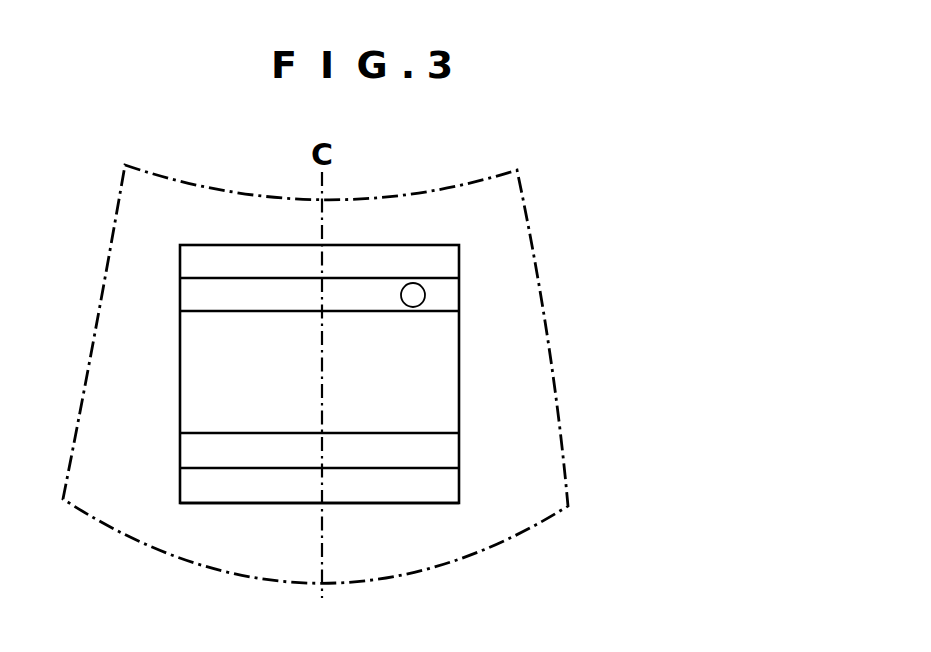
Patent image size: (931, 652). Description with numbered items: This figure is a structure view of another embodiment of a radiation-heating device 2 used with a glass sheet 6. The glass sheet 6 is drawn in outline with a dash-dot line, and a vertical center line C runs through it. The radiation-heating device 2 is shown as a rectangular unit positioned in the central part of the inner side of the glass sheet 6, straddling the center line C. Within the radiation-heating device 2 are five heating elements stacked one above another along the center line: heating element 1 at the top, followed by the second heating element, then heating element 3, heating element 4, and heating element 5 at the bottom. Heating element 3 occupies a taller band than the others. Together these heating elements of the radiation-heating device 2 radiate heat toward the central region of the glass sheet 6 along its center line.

The radiation-heating device 2 is at (487, 312).
The glass sheet 6 is at (533, 240).
The heating element 1 is at (319, 264).
The heating element 3 is at (319, 392).
The heating element 4 is at (319, 455).
The heating element 5 is at (319, 489).